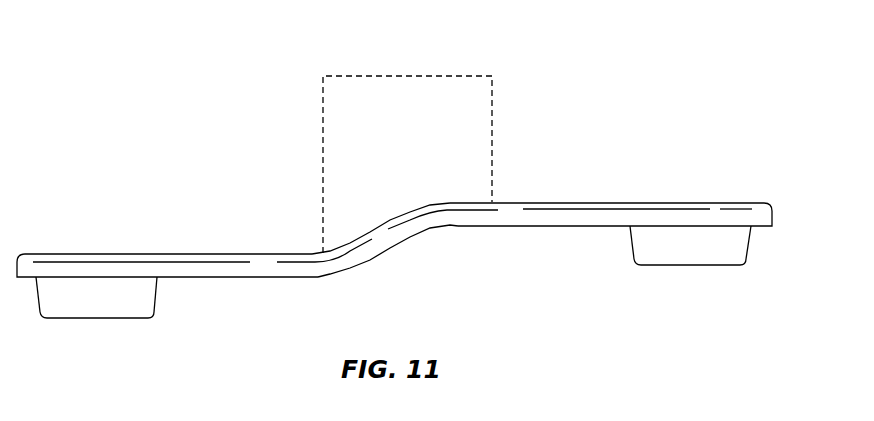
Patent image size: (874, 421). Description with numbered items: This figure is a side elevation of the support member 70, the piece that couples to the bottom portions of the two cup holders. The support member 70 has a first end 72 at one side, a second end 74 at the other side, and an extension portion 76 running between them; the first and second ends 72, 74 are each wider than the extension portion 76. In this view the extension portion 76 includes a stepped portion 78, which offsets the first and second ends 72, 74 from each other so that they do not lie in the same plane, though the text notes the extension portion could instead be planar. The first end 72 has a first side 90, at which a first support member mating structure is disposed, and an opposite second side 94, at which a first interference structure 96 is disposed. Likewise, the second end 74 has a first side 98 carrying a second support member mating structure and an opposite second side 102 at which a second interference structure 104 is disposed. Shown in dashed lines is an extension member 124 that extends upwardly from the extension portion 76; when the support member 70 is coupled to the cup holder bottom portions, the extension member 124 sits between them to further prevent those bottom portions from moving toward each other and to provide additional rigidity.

The support member 70 is at (481, 148).
The first end 72 is at (77, 253).
The second end 74 is at (652, 202).
The extension portion 76 is at (400, 210).
The stepped portion 78 is at (407, 238).
The first side 90 is at (136, 253).
The second side 94 is at (180, 277).
The first interference structure 96 is at (153, 308).
The first side 98 is at (707, 202).
The second side 102 is at (616, 227).
The second interference structure 104 is at (636, 262).
The extension member 124 is at (324, 76).